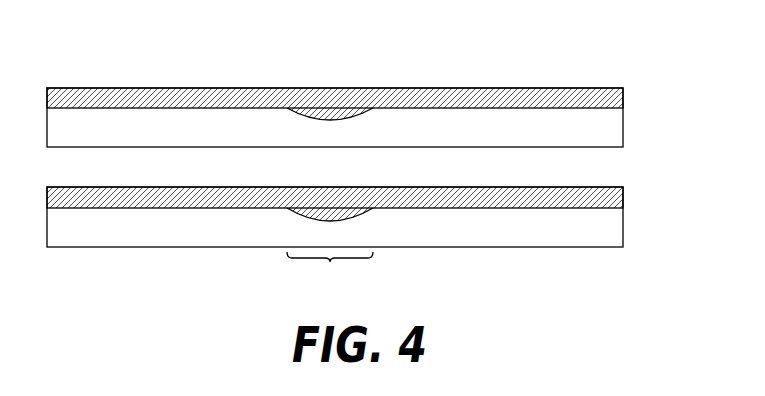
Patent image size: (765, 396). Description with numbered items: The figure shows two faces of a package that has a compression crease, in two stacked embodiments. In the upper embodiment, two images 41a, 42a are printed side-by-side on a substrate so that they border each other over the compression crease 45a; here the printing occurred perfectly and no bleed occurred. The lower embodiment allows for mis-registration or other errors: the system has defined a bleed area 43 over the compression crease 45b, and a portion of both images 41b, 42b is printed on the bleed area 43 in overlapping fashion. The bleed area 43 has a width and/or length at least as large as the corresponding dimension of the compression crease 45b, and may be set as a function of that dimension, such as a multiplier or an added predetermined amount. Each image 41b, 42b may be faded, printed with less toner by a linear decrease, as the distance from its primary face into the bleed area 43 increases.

The image 41a is at (203, 80).
The image 41b is at (203, 218).
The image 42a is at (634, 98).
The image 42b is at (634, 188).
The bleed area 43 is at (330, 271).
The compression crease 45a is at (373, 123).
The compression crease 45b is at (373, 223).